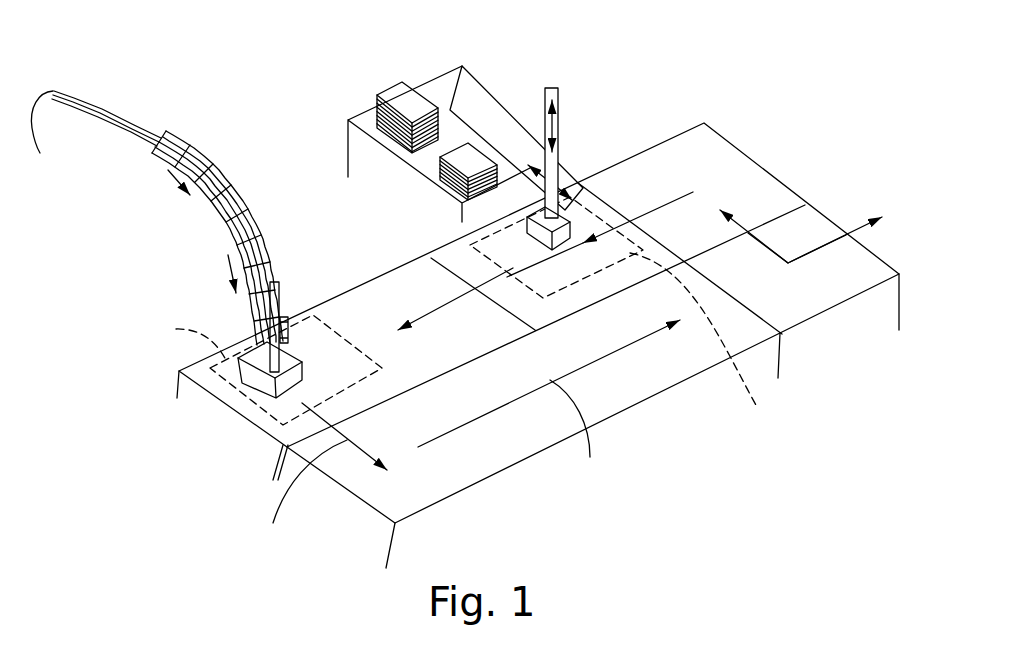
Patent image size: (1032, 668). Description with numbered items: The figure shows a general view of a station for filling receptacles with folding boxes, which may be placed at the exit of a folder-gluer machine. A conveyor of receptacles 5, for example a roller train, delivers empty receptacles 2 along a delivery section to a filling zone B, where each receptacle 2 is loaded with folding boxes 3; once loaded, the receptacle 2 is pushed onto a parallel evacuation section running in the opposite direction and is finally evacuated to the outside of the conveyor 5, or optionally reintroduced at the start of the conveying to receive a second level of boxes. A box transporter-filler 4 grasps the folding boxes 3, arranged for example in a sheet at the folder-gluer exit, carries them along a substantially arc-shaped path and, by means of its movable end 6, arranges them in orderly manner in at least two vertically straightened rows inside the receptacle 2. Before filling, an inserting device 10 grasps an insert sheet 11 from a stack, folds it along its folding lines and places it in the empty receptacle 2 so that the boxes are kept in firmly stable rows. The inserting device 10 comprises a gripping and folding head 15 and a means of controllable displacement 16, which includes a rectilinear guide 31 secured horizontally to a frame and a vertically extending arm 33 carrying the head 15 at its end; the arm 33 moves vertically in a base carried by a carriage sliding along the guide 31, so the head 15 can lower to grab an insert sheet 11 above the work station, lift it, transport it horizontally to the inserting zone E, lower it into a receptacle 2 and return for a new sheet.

The receptacle 2 is at (287, 390).
The folding box 3 is at (257, 262).
The box transporter-filler 4 is at (132, 133).
The conveyor of receptacles 5 is at (368, 308).
The movable end 6 is at (283, 368).
The inserting device 10 is at (357, 100).
The insert sheet 11 is at (460, 162).
The gripping and folding head 15 is at (567, 226).
The means of controllable displacement 16 is at (531, 118).
The rectilinear guide 31 is at (463, 110).
The arm 33 is at (558, 112).